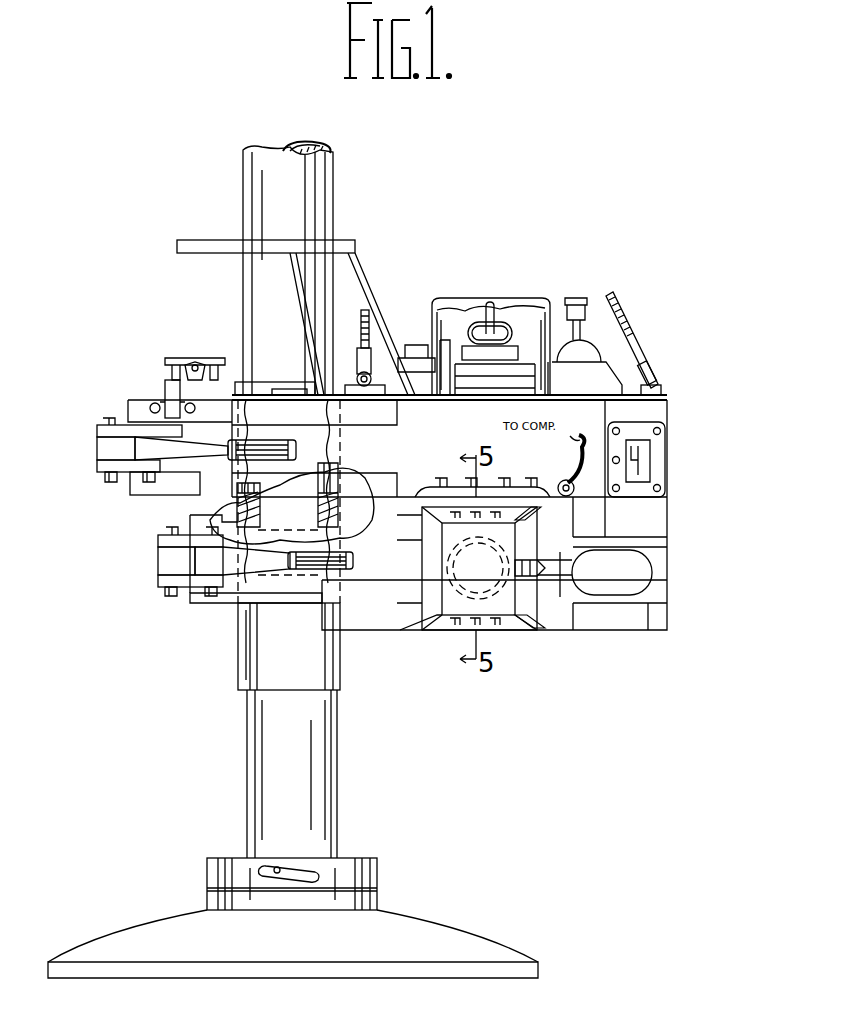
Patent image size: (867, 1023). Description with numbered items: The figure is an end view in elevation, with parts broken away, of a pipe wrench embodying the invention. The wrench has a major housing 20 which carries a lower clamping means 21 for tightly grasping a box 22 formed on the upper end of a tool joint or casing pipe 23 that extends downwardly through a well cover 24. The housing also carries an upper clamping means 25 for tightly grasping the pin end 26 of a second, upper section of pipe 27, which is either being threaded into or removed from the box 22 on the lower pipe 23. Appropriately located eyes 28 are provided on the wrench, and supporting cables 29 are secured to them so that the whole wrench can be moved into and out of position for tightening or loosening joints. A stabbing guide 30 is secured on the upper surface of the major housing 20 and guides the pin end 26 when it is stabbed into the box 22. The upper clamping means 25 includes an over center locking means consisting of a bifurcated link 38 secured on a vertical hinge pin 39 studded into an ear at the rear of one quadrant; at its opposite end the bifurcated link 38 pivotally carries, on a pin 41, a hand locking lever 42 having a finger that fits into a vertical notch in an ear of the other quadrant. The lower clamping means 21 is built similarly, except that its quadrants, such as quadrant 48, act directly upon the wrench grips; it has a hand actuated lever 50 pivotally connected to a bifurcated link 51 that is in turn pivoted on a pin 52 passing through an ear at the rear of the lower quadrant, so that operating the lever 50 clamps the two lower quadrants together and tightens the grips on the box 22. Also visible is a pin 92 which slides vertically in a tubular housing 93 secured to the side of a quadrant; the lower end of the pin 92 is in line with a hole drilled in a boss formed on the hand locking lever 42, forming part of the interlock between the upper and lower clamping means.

The major housing 20 is at (577, 643).
The lower clamping means 21 is at (180, 607).
The box 22 is at (340, 636).
The tool joint or casing pipe 23 is at (247, 746).
The well cover 24 is at (418, 918).
The upper clamping means 25 is at (138, 511).
The pin end 26 is at (280, 386).
The upper section of pipe 27 is at (243, 206).
The eyes 28 is at (354, 382).
The supporting cables 29 is at (368, 322).
The stabbing guide 30 is at (355, 247).
The bifurcated link 38 is at (97, 462).
The vertical hinge pin 39 is at (110, 418).
The pin 41 is at (135, 484).
The hand locking lever 42 is at (210, 464).
The quadrant 48 is at (232, 598).
The hand actuated lever 50 is at (156, 580).
The bifurcated link 51 is at (160, 540).
The pin 52 is at (182, 530).
The pin 92 is at (168, 372).
The tubular housing 93 is at (165, 392).